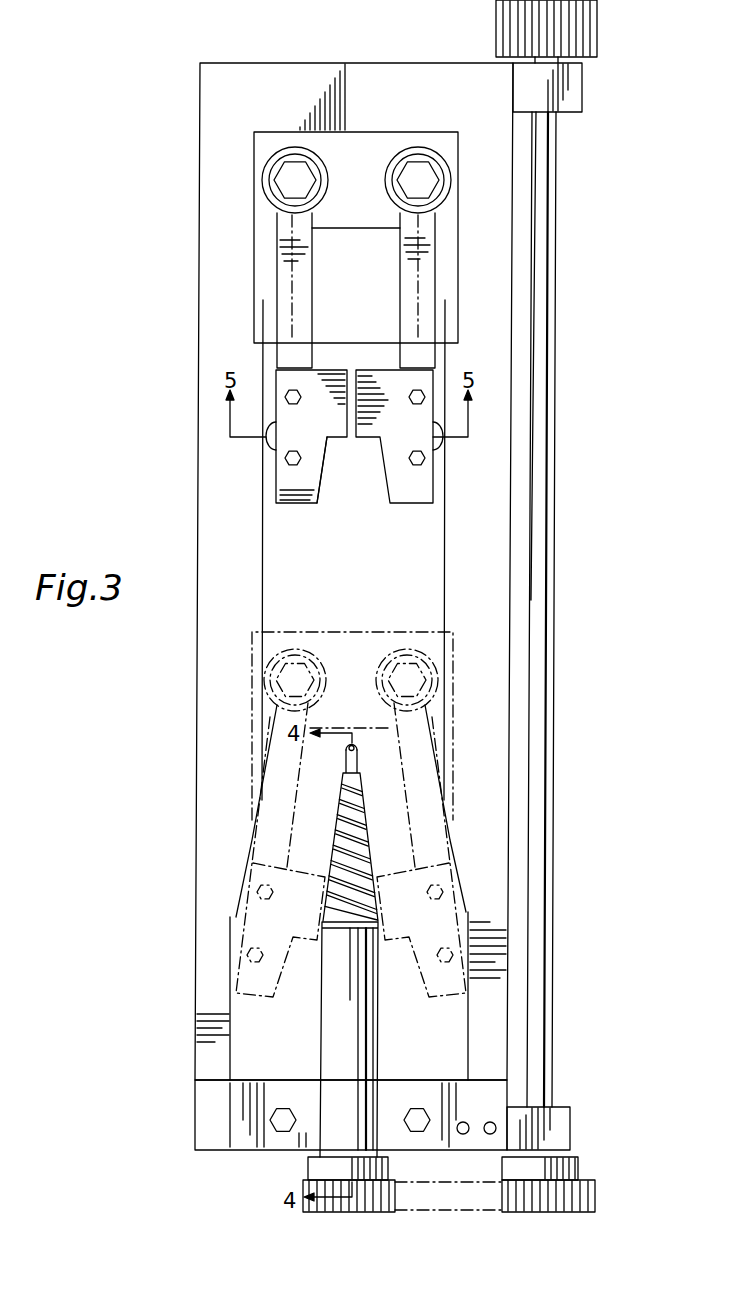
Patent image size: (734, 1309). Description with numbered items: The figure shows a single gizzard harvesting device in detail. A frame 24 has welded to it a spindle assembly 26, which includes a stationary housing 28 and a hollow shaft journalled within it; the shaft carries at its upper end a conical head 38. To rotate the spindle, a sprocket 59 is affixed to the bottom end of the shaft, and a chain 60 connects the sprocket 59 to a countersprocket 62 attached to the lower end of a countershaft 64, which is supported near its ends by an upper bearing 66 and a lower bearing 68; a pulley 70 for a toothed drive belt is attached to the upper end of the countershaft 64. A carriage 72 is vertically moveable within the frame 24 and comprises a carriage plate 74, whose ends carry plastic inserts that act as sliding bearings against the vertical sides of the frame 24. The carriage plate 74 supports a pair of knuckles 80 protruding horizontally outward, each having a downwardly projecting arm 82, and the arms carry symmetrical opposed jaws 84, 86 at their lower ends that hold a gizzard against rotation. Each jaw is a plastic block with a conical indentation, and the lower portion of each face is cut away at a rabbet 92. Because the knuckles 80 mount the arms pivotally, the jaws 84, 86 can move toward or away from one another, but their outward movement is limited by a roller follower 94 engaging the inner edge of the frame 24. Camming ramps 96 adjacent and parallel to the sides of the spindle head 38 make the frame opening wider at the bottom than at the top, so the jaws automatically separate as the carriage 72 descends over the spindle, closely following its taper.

The frame 24 is at (433, 111).
The spindle assembly 26 is at (378, 1074).
The stationary housing 28 is at (325, 1033).
The conical head 38 is at (365, 842).
The sprocket 59 is at (388, 1170).
The chain 60 is at (455, 1185).
The countersprocket 62 is at (578, 1174).
The countershaft 64 is at (556, 1076).
The upper bearing 66 is at (582, 95).
The lower bearing 68 is at (568, 1130).
The pulley 70 is at (596, 35).
The carriage 72 is at (459, 212).
The carriage plate 74 is at (370, 220).
The knuckles 80 is at (388, 180).
The arm 82 is at (410, 308).
The jaw 84 is at (299, 504).
The jaw 86 is at (410, 504).
The rabbet 92 is at (323, 472).
The roller follower 94 is at (268, 445).
The camming ramps 96 is at (246, 885).